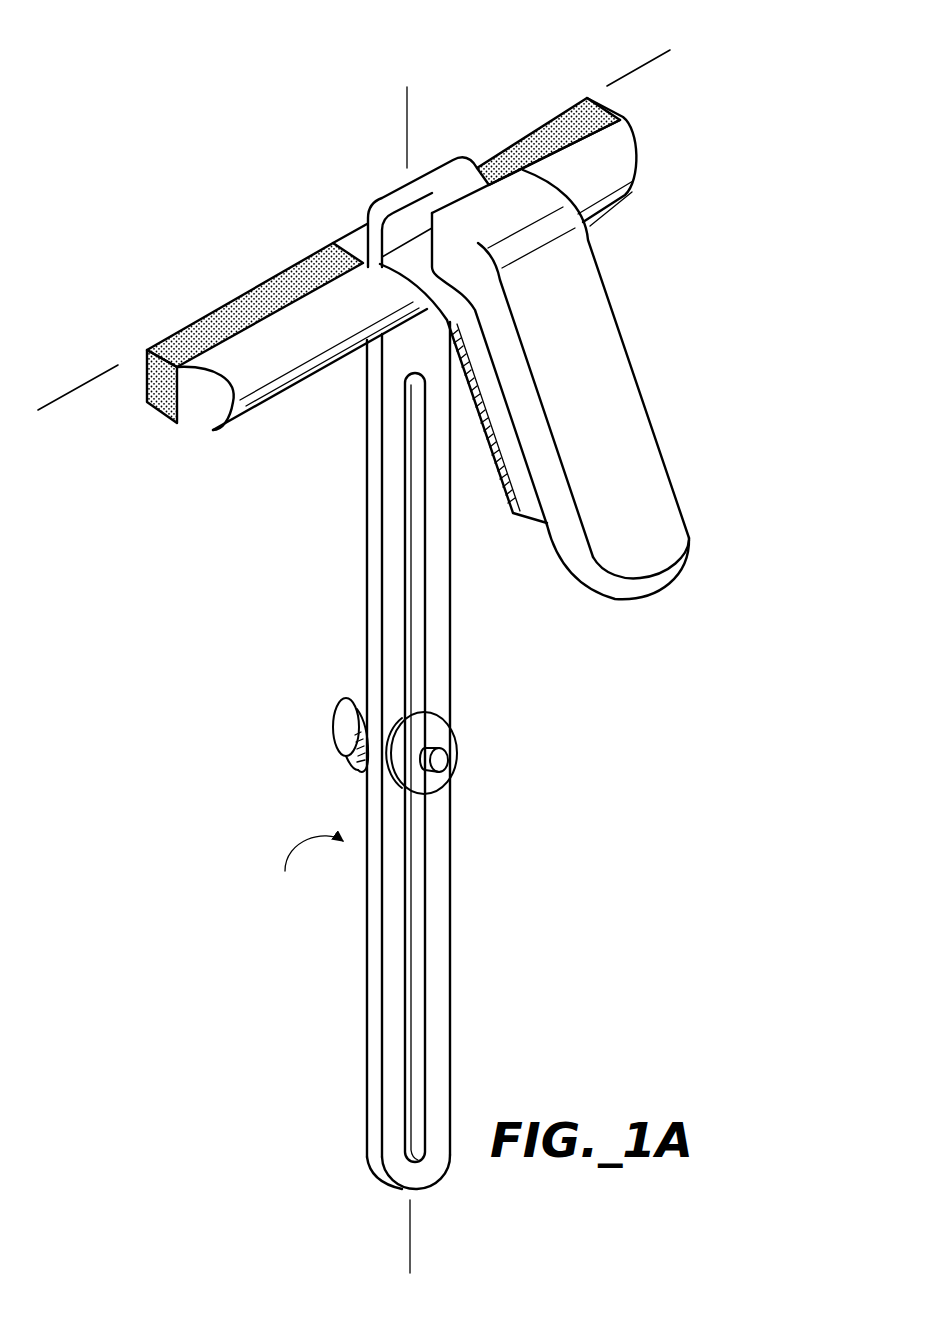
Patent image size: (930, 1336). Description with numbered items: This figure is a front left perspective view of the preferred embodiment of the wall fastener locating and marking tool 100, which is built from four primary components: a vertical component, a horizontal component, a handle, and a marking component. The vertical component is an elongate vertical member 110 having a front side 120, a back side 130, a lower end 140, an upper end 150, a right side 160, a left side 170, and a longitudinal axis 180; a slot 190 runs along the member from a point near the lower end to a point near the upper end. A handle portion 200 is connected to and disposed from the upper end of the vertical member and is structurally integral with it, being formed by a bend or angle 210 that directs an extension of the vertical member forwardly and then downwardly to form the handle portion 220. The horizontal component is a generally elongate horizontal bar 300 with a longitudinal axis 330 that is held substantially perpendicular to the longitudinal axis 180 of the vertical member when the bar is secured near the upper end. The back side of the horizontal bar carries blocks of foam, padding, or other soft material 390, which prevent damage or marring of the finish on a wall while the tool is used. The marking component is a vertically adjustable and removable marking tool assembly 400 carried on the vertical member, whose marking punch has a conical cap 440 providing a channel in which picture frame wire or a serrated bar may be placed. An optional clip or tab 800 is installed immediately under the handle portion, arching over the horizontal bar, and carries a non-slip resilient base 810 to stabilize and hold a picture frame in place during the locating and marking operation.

The wall fastener locating and marking tool 100 is at (345, 98).
The vertical member 110 is at (387, 548).
The front side 120 is at (437, 988).
The back side 130 is at (317, 860).
The lower end 140 is at (360, 1165).
The upper end 150 is at (351, 180).
The right side 160 is at (452, 913).
The left side 170 is at (368, 1003).
The longitudinal axis 180 is at (407, 113).
The slot 190 is at (428, 860).
The handle portion 200 is at (645, 650).
The bend or angle 210 is at (373, 218).
The handle portion 220 is at (619, 443).
The horizontal bar 300 is at (247, 387).
The longitudinal axis 330 is at (638, 66).
The soft material 390 is at (272, 290).
The marking tool assembly 400 is at (324, 737).
The conical cap 440 is at (446, 763).
The clip or tab 800 is at (542, 527).
The non-slip resilient base 810 is at (497, 477).